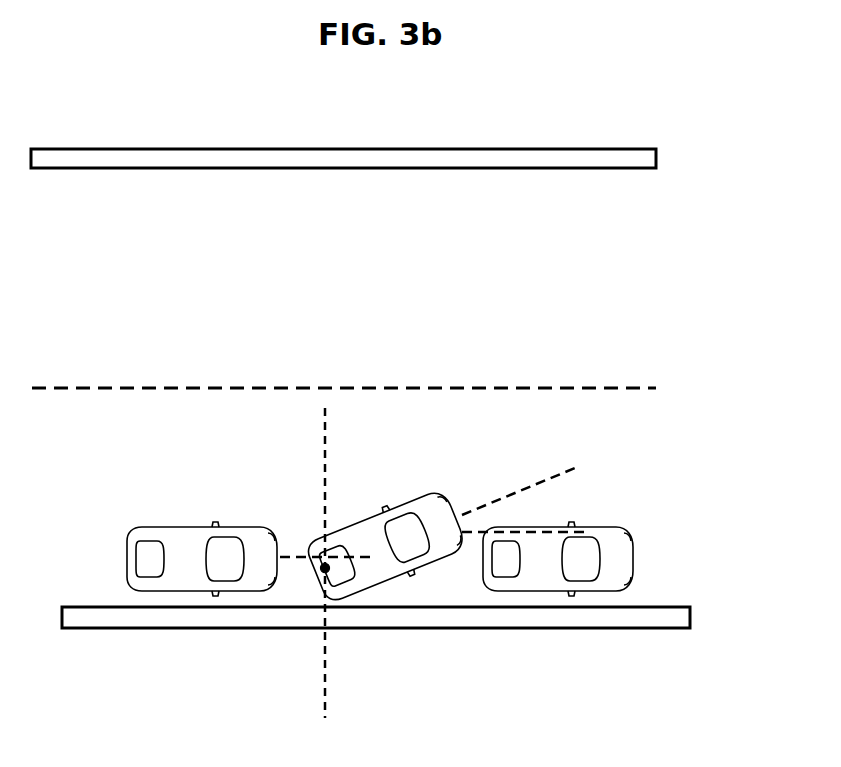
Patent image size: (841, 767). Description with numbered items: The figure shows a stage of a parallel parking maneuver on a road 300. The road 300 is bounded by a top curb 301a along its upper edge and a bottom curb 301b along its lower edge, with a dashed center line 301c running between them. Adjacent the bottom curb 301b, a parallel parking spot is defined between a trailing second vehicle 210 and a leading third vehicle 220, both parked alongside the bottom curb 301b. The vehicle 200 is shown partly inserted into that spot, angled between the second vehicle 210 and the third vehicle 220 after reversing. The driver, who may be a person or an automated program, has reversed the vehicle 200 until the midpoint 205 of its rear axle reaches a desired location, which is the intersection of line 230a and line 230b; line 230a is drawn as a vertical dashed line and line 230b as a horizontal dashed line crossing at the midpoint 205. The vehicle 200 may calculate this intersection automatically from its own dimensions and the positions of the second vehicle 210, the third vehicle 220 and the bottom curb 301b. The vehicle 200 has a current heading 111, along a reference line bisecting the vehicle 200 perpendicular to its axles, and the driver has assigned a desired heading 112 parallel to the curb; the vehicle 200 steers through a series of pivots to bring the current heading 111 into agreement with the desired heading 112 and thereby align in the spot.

The road 300 is at (708, 124).
The top curb 301a is at (359, 149).
The bottom curb 301b is at (384, 628).
The center line 301c is at (265, 387).
The vehicle 200 is at (417, 500).
The midpoint of the rear axle 205 is at (325, 568).
The second vehicle 210 is at (127, 568).
The third vehicle 220 is at (634, 568).
The line 230a is at (325, 462).
The line 230b is at (298, 558).
The current heading 111 is at (540, 483).
The desired heading 112 is at (465, 533).